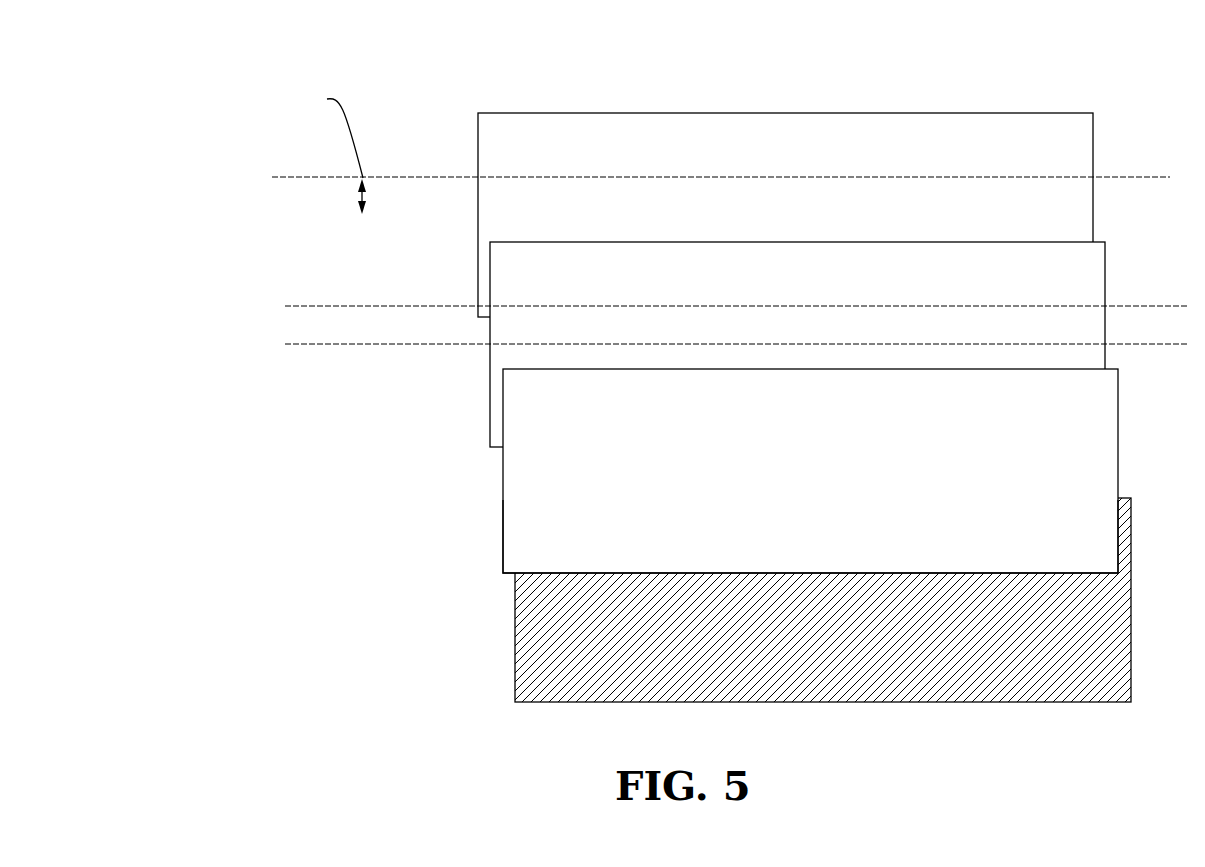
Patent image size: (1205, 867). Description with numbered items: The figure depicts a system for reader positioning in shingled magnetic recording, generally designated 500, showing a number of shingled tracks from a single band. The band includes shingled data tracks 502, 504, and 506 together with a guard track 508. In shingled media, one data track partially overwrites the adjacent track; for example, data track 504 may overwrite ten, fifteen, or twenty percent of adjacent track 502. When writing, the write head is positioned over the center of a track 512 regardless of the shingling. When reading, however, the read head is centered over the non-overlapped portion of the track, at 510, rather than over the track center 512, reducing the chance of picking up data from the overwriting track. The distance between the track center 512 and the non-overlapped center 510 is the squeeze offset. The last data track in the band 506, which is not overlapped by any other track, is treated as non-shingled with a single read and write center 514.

The system for reader positioning in shingled magnetic recording 500 is at (200, 33).
The shingled data track 502 is at (478, 137).
The shingled data track 504 is at (490, 422).
The last data track in a band 506 is at (503, 554).
The guard track 508 is at (515, 668).
The center of the non-overlapped portion of a track 510 is at (328, 305).
The center of a track 512 is at (328, 344).
The single read and write center 514 is at (344, 471).